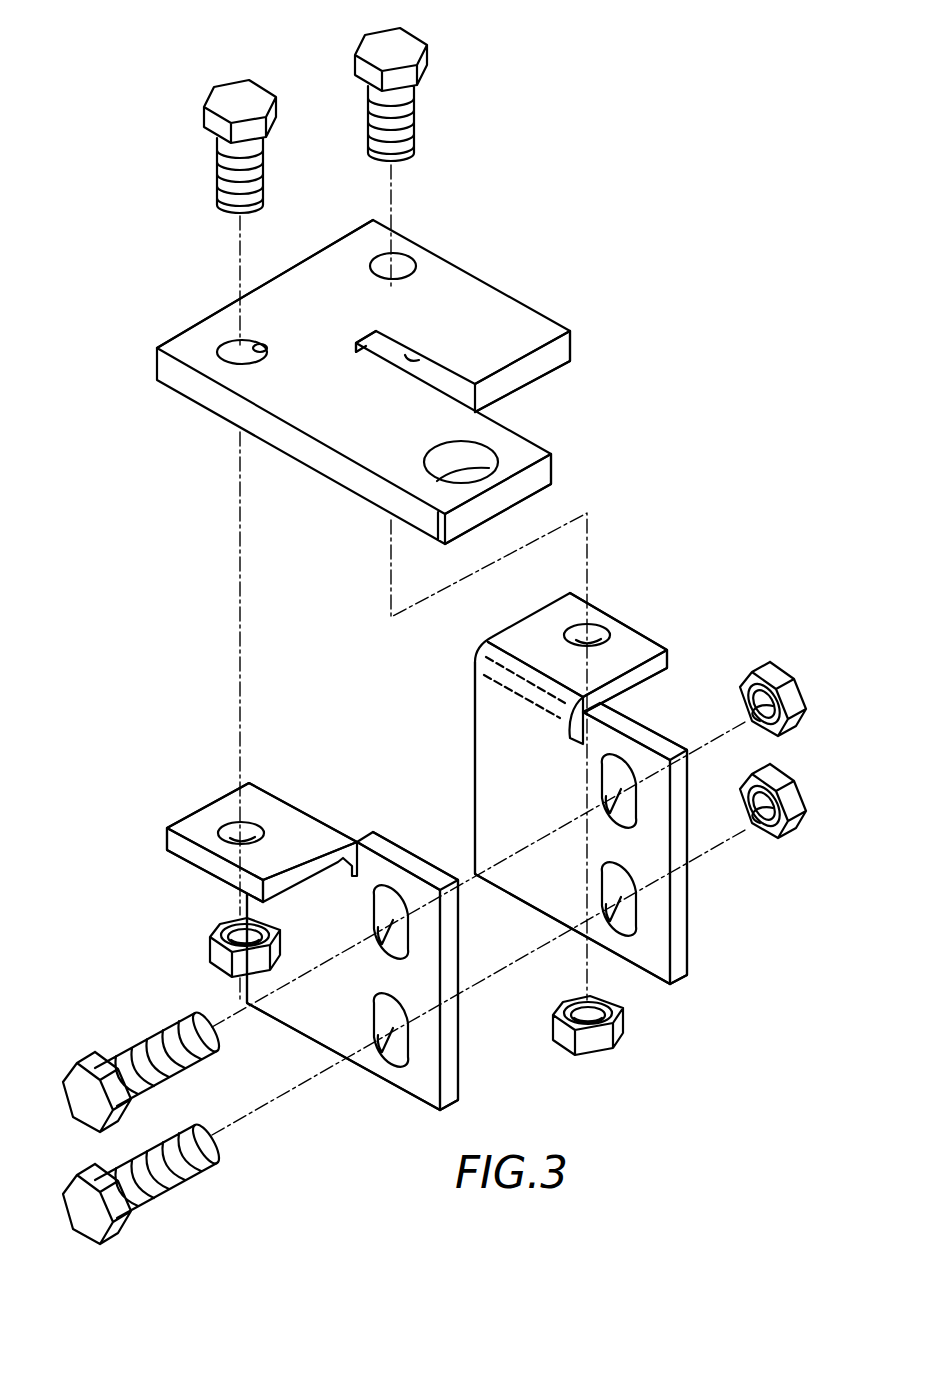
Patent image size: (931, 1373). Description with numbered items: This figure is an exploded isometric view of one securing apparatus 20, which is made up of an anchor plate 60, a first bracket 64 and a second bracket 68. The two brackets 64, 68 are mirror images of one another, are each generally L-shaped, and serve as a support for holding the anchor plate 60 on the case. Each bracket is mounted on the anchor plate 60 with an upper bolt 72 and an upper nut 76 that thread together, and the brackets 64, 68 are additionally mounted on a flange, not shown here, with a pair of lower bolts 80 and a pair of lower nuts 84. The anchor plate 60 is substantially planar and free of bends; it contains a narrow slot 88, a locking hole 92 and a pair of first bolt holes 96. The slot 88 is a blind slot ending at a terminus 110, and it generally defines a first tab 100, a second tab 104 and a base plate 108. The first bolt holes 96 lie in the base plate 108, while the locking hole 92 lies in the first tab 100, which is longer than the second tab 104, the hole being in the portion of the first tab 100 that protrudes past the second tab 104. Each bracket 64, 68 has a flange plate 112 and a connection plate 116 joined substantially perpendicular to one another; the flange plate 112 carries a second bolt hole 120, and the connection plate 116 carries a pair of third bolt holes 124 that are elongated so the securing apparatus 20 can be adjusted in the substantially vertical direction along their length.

The securing apparatus 20 is at (621, 403).
The anchor plate 60 is at (494, 273).
The first bracket 64 is at (390, 1098).
The second bracket 68 is at (703, 963).
The upper bolt 72 is at (233, 82).
The upper nut 76 is at (210, 950).
The lower bolt 80 is at (64, 1080).
The lower nut 84 is at (795, 679).
The slot 88 is at (421, 356).
The locking hole 92 is at (452, 448).
The first bolt hole 96 is at (377, 262).
The first tab 100 is at (538, 487).
The second tab 104 is at (543, 366).
The base plate 108 is at (296, 263).
The terminus 110 is at (371, 350).
The flange plate 112 is at (459, 1068).
The connection plate 116 is at (180, 855).
The second bolt hole 120 is at (250, 834).
The third bolt hole 124 is at (405, 1023).